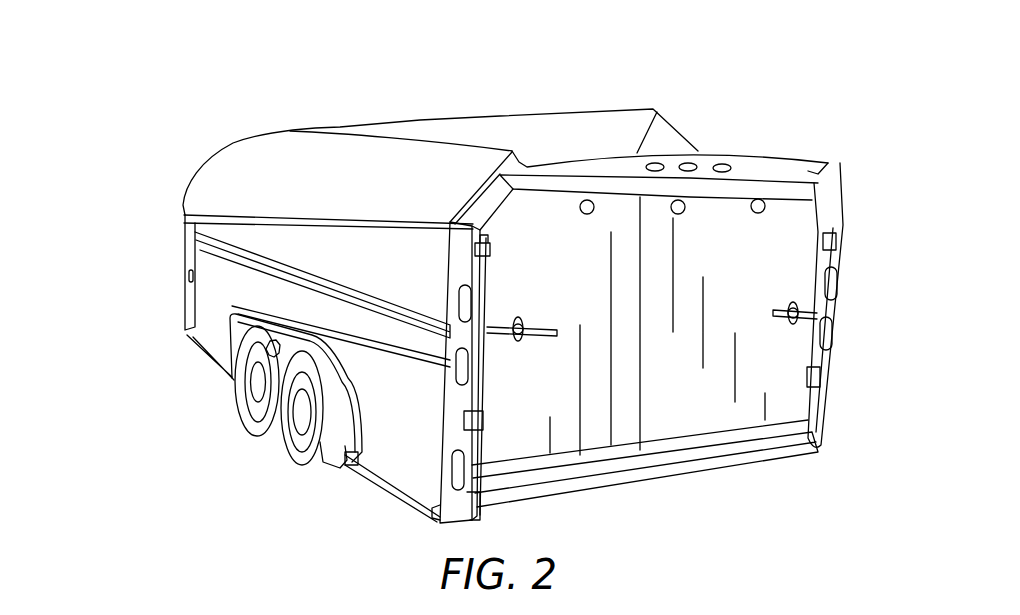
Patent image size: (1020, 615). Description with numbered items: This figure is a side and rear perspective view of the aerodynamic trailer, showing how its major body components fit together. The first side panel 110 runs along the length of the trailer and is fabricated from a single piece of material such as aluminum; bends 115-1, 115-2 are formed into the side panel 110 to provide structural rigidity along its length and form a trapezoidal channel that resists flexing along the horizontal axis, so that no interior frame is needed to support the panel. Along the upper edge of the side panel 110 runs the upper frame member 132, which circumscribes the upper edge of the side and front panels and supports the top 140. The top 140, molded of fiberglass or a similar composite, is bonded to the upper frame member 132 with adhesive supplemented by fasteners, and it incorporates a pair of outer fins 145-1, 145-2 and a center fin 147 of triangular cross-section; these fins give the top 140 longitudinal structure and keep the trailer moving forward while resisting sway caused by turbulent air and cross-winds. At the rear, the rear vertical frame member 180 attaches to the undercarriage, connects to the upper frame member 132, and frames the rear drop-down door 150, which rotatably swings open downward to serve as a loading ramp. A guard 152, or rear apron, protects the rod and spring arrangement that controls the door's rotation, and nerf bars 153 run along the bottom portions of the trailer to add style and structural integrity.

The first side panel 110 is at (366, 406).
The bend 115-1 is at (216, 244).
The bend 115-2 is at (351, 332).
The upper frame member 132 is at (281, 219).
The top 140 is at (250, 160).
The outer fin 145-1 is at (467, 155).
The outer fin 145-2 is at (832, 158).
The center fin 147 is at (498, 127).
The rear drop-down door 150 is at (630, 403).
The guard 152 is at (776, 442).
The nerf bars 153 is at (396, 491).
The rear vertical frame member 180 is at (480, 216).